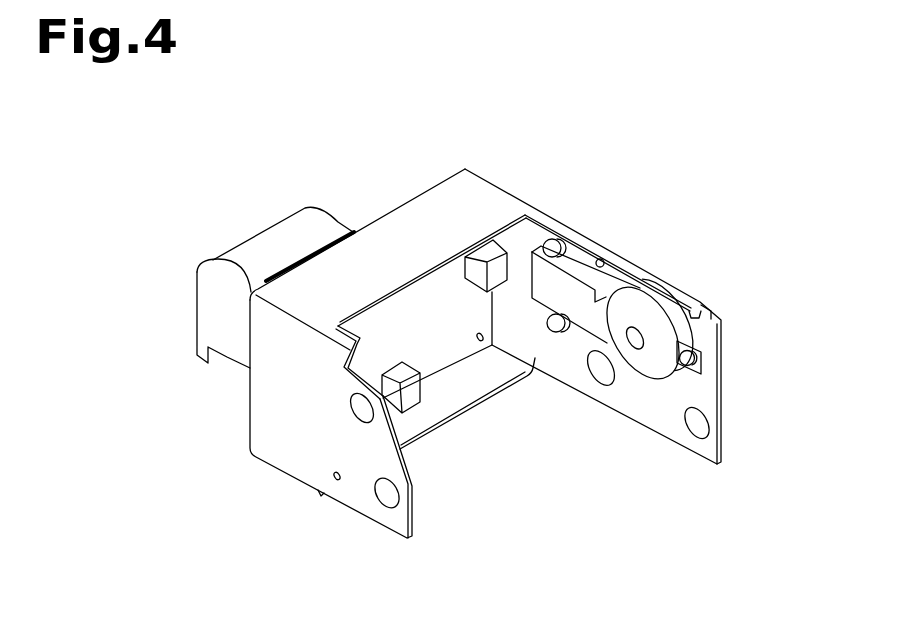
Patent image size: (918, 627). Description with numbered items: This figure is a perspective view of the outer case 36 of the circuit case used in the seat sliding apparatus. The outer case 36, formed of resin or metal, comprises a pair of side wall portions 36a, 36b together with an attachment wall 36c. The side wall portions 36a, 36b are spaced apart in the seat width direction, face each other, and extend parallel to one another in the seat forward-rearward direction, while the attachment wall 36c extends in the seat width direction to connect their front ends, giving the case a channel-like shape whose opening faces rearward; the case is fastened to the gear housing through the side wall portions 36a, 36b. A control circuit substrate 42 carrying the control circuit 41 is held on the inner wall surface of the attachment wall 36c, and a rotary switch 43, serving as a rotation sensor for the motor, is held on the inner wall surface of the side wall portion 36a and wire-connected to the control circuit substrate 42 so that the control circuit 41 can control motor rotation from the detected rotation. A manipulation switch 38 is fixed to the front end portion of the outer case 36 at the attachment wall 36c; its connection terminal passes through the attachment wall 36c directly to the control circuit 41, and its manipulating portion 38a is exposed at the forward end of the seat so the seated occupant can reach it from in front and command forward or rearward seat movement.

The outer case 36 is at (526, 333).
The side wall portion 36a is at (712, 338).
The side wall portion 36b is at (277, 458).
The attachment wall 36c is at (378, 217).
The manipulation switch 38 is at (229, 287).
The manipulating portion 38a is at (205, 305).
The control circuit 41 is at (413, 412).
The control circuit substrate 42 is at (445, 360).
The rotary switch 43 is at (596, 301).